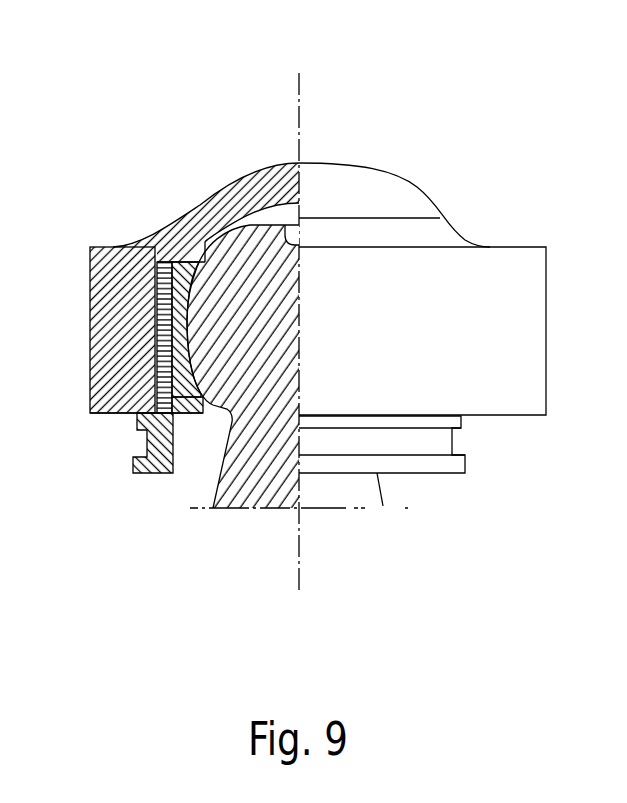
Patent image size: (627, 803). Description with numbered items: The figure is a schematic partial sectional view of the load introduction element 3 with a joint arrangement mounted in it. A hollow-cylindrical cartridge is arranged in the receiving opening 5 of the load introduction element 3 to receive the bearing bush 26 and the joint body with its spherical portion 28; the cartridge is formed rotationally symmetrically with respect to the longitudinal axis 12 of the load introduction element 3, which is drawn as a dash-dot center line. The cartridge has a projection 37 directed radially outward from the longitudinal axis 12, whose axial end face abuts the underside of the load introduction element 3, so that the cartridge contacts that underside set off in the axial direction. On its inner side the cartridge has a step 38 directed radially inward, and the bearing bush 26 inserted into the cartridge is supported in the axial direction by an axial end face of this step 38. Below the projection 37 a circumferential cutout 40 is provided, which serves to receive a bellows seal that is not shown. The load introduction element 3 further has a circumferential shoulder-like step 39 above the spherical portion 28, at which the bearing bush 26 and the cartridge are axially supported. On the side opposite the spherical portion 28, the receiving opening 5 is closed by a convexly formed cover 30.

The load introduction element 3 is at (420, 184).
The receiving opening 5 is at (157, 358).
The longitudinal axis 12 is at (298, 90).
The bearing bush 26 is at (183, 278).
The spherical portion 28 is at (180, 317).
The cover 30 is at (253, 173).
The projection 37 is at (137, 420).
The step 38 is at (187, 413).
The shoulder-like step 39 is at (180, 262).
The circumferential cutout 40 is at (452, 445).